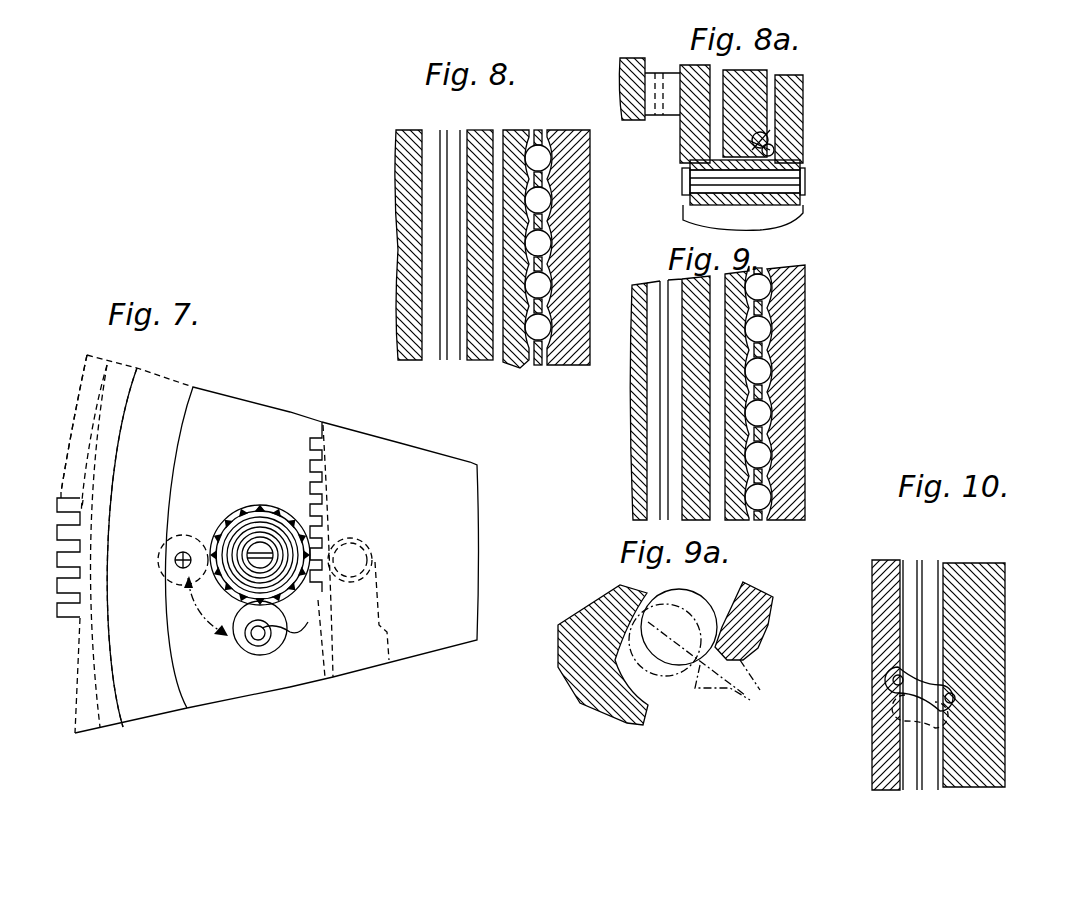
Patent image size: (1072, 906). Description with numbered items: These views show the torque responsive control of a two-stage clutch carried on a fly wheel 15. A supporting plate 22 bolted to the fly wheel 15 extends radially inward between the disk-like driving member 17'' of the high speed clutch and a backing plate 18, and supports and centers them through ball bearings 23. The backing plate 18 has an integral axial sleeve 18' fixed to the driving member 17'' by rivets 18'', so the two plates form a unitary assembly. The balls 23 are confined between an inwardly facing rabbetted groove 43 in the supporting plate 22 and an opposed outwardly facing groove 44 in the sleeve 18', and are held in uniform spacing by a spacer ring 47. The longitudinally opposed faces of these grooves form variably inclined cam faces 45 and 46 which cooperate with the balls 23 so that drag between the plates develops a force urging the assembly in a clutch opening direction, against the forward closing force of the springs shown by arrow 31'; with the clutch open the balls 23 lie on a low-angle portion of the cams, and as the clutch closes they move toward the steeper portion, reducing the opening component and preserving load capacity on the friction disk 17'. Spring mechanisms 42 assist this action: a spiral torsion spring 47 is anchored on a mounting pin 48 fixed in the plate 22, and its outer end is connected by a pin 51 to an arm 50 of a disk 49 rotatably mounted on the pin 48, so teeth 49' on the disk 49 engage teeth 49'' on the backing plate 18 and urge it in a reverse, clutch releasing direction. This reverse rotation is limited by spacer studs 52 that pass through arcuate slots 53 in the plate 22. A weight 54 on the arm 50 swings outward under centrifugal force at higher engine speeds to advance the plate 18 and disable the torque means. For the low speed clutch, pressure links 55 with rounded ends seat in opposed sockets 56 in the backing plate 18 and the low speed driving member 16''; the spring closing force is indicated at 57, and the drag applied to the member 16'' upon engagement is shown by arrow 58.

In FIG. 7, the fly wheel 15 is at (158, 380).
In FIG. 8, the fly wheel 15 is at (406, 292).
In FIG. 9, the fly wheel 15 is at (640, 460).
In FIG. 10, the low speed clutch driving member 16'' is at (993, 675).
In FIG. 8, the friction disk 17' is at (442, 263).
In FIG. 9, the friction disk 17' is at (630, 400).
In FIG. 10, the friction disk 17' is at (884, 675).
In FIG. 8, the disk-like driving member 17'' is at (472, 264).
In FIG. 8A, the disk-like driving member 17'' is at (664, 110).
In FIG. 9, the disk-like driving member 17'' is at (651, 398).
In FIG. 7, the backing plate 18 is at (384, 544).
In FIG. 8, the backing plate 18 is at (586, 247).
In FIG. 8A, the backing plate 18 is at (807, 119).
In FIG. 9, the backing plate 18 is at (803, 392).
In FIG. 9A, the backing plate 18 is at (729, 658).
In FIG. 10, the backing plate 18 is at (865, 675).
In FIG. 8A, the axial sleeve 18' is at (760, 218).
In FIG. 8A, the rivets 18'' is at (766, 181).
In FIG. 7, the supporting plate 22 is at (232, 406).
In FIG. 8, the supporting plate 22 is at (511, 368).
In FIG. 8A, the supporting plate 22 is at (767, 64).
In FIG. 9, the supporting plate 22 is at (737, 358).
In FIG. 9A, the supporting plate 22 is at (595, 690).
In FIG. 8, the ball bearings 23 is at (541, 160).
In FIG. 9, the ball bearings 23 is at (765, 497).
In FIG. 9A, the ball bearings 23 is at (680, 665).
In FIG. 8, the arrow 31' is at (612, 344).
In FIG. 9, the arrow 31' is at (829, 443).
In FIG. 7, the spring mechanism 42 is at (255, 492).
In FIG. 8A, the rabbetted groove 43 is at (763, 132).
In FIG. 8A, the rabbetted groove 44 is at (775, 152).
In FIG. 8, the cam face 45 is at (540, 180).
In FIG. 8A, the cam face 45 is at (740, 205).
In FIG. 9A, the cam face 45 is at (607, 590).
In FIG. 8, the cam face 46 is at (554, 192).
In FIG. 8A, the cam face 46 is at (771, 142).
In FIG. 9A, the cam face 46 is at (770, 598).
In FIG. 7, the spacer ring 47 is at (290, 637).
In FIG. 8, the spacer ring 47 is at (540, 270).
In FIG. 8A, the spacer ring 47 is at (800, 165).
In FIG. 9, the spacer ring 47 is at (760, 350).
In FIG. 7, the mounting pin 48 is at (206, 611).
In FIG. 7, the disk 49 is at (249, 548).
In FIG. 7, the teeth 49' is at (370, 586).
In FIG. 7, the teeth 49'' is at (347, 484).
In FIG. 7, the arm 50 is at (280, 608).
In FIG. 7, the pin 51 is at (178, 556).
In FIG. 7, the spacer studs 52 is at (372, 562).
In FIG. 7, the arcuate slots 53 is at (390, 635).
In FIG. 7, the weight 54 is at (165, 567).
In FIG. 10, the pressure link 55 is at (903, 704).
In FIG. 10, the sockets 56 is at (888, 685).
In FIG. 10, the spring force indication 57 is at (1037, 620).
In FIG. 10, the arrow 58 is at (972, 540).